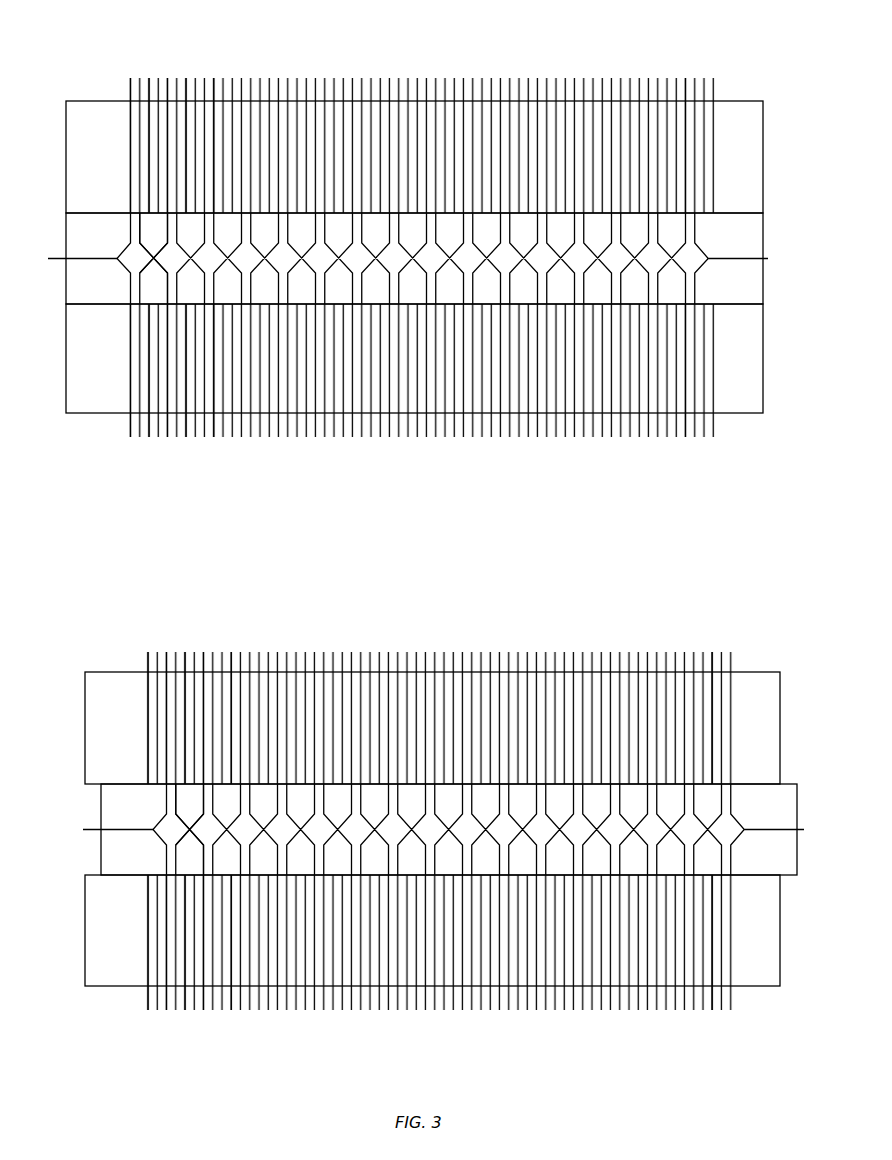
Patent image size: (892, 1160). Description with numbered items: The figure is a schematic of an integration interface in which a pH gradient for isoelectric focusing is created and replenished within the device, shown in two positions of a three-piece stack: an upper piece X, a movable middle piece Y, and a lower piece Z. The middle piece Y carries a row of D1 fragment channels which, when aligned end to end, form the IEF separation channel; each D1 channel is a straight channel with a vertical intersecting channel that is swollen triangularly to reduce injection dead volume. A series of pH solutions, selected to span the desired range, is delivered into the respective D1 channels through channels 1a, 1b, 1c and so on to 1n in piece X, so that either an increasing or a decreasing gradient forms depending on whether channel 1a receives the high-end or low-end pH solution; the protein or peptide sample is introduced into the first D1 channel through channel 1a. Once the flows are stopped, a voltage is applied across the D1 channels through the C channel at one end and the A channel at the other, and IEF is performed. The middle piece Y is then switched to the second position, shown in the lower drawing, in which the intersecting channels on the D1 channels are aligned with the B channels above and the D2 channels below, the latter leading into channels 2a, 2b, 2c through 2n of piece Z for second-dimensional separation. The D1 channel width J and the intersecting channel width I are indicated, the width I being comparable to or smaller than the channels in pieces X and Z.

The channel 1a is at (133, 78).
The channel 1b is at (168, 78).
The channel 1c is at (210, 78).
The channel 1n is at (690, 78).
The channel 2a is at (130, 437).
The channel 2b is at (168, 437).
The channel 2c is at (207, 437).
The channel 2n is at (690, 437).
The B channels B is at (188, 78).
The D2 channels D2 is at (188, 437).
The D1 fragment channels D1 is at (120, 264).
The piece X is at (745, 112).
The middle piece Y is at (742, 283).
The piece Z is at (740, 388).
The A channel A is at (745, 255).
The C channel C is at (80, 255).
The intersecting channel width I is at (167, 251).
The D1 channel width J is at (141, 264).